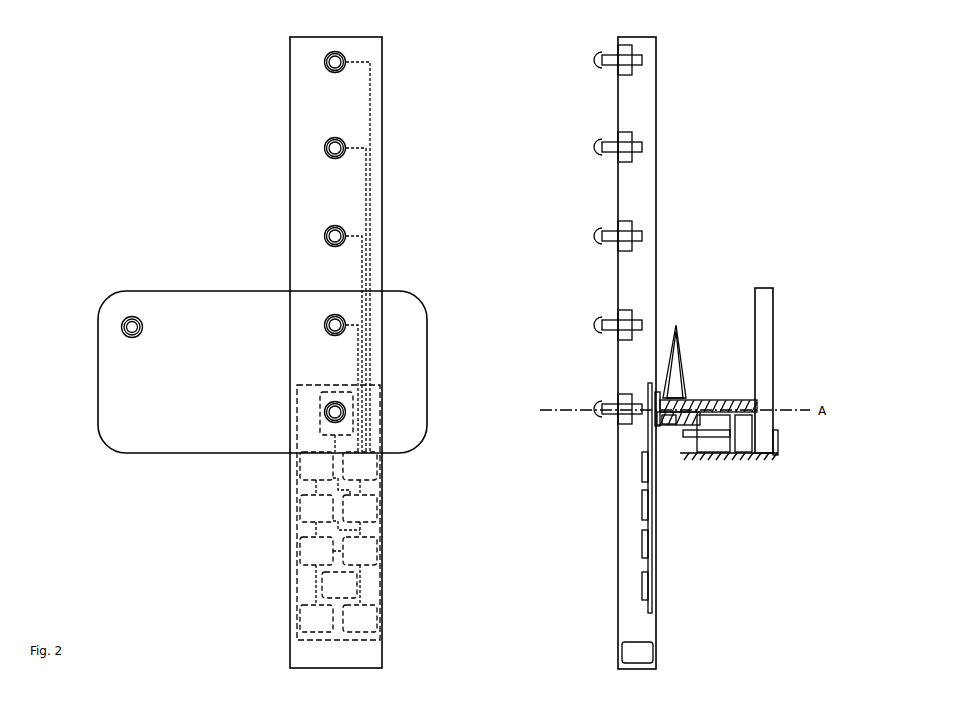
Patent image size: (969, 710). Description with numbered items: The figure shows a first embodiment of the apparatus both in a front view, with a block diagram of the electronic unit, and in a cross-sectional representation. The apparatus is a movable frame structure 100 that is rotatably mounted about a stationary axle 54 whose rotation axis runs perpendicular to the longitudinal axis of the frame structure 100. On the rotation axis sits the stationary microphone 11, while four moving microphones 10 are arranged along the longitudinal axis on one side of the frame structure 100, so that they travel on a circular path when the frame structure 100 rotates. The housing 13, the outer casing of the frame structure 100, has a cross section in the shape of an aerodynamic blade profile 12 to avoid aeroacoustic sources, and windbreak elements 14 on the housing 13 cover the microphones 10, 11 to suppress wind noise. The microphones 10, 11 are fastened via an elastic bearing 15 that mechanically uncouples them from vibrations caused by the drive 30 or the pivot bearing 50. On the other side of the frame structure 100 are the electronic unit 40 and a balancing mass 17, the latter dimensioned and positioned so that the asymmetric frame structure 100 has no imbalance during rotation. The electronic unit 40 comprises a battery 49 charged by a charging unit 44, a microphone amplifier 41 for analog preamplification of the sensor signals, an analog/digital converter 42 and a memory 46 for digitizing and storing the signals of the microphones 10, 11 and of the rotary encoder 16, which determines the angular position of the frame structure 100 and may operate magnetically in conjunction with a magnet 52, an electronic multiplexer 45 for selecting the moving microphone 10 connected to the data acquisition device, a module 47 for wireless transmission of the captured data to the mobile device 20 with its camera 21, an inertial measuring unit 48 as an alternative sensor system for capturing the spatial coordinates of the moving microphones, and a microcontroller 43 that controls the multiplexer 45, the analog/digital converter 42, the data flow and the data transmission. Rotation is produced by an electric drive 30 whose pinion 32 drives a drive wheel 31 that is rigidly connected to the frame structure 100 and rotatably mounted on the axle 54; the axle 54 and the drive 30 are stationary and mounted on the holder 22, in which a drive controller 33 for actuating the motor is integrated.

The frame structure 100 is at (288, 190).
The microphones 10 is at (598, 325).
The blade profile 12 is at (297, 180).
The housing 13 is at (335, 193).
The windbreak elements 14 is at (347, 233).
The mobile device 20 is at (402, 447).
The camera 21 is at (138, 320).
The stationary microphone 11 is at (347, 408).
The elastic bearing 15 is at (395, 372).
The rotary encoder 16 is at (342, 397).
The electronic unit 40 is at (374, 518).
The microphone amplifier 41 is at (273, 483).
The analog/digital converter 42 is at (282, 517).
The microcontroller 43 is at (268, 558).
The charging unit 44 is at (258, 638).
The electronic multiplexer 45 is at (410, 491).
The memory 46 is at (400, 523).
The module 47 is at (400, 552).
The Inertial measuring unit 48 is at (266, 597).
The battery 49 is at (413, 628).
The pivot bearing 50 is at (703, 342).
The drive wheel 31 is at (688, 396).
The axle 54 is at (730, 397).
The drive 30 is at (733, 453).
The Drive controller 33 is at (742, 435).
The holder 22 is at (775, 445).
The pinion 32 is at (676, 423).
The Magnet 52 is at (655, 418).
The balancing mass 17 is at (638, 652).